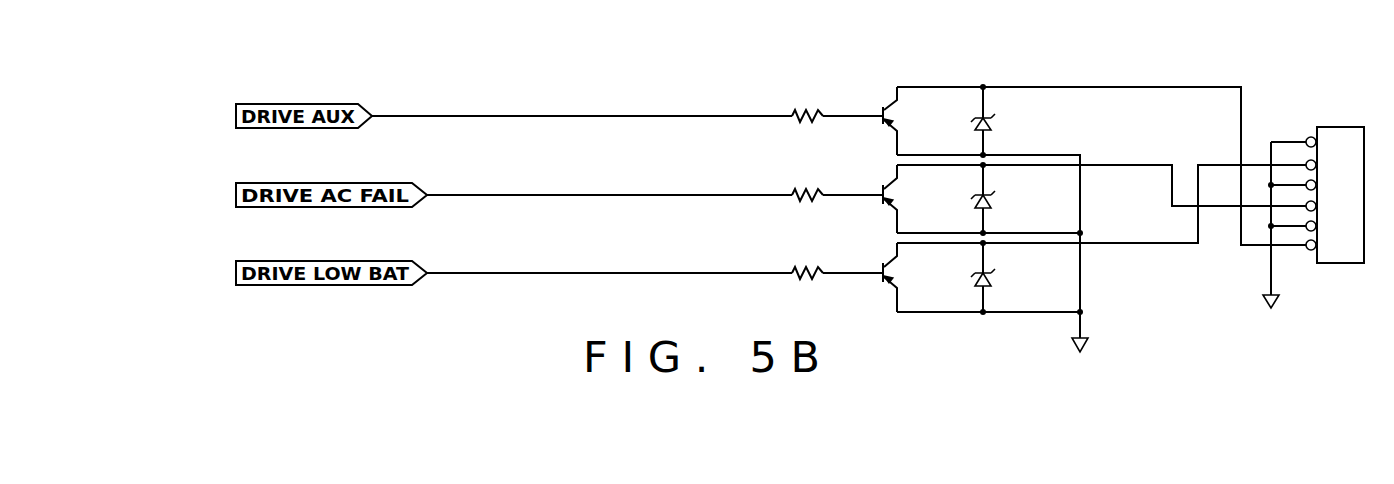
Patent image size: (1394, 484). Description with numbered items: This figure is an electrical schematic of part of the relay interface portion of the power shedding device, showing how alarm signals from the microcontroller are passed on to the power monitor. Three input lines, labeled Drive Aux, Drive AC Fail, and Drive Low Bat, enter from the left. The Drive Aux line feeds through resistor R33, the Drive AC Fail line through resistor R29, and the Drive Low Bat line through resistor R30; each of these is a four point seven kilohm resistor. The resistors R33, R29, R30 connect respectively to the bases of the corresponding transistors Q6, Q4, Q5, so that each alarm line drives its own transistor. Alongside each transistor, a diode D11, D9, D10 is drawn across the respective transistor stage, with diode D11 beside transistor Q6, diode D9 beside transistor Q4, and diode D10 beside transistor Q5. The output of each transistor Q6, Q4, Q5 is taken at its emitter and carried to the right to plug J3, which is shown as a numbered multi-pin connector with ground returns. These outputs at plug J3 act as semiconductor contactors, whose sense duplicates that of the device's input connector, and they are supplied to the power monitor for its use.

The resistor R33 is at (808, 106).
The resistor R29 is at (808, 186).
The resistor R30 is at (808, 265).
The transistor Q6 is at (877, 108).
The transistor Q4 is at (877, 186).
The transistor Q5 is at (877, 265).
The zener diode D11 is at (991, 123).
The zener diode D9 is at (991, 200).
The zener diode D10 is at (991, 284).
The plug J3 is at (1333, 127).